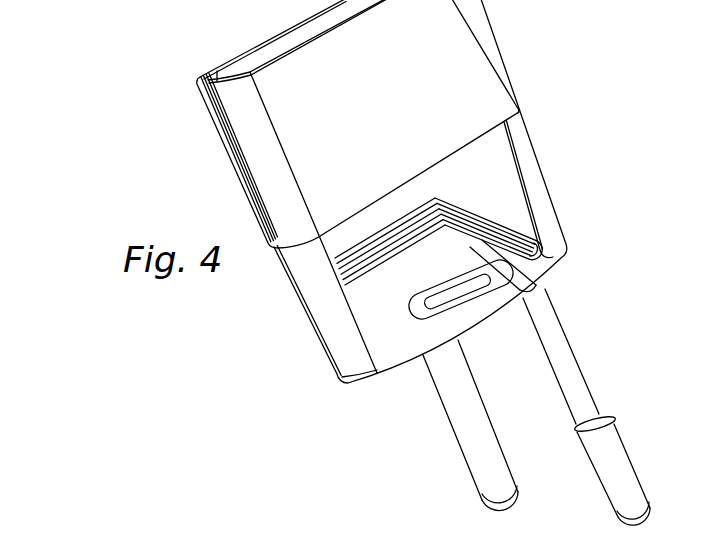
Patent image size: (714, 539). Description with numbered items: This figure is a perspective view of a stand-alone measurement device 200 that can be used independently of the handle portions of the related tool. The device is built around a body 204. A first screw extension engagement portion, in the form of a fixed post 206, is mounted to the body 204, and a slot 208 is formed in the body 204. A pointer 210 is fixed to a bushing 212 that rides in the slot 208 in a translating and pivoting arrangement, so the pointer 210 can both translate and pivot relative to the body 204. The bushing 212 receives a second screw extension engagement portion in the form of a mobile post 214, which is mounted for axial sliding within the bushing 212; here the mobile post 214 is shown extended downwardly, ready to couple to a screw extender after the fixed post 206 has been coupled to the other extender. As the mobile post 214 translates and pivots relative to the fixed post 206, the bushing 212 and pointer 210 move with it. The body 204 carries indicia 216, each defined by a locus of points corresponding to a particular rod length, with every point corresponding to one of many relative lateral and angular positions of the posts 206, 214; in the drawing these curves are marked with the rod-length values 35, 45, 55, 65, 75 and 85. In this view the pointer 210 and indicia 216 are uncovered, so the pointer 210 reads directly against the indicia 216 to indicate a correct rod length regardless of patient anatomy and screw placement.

The measurement device 200 is at (93, 103).
The body 204 is at (331, 364).
The fixed post 206 is at (465, 458).
The slot 208 is at (478, 275).
The pointer 210 is at (497, 240).
The bushing 212 is at (537, 288).
The mobile post 214 is at (610, 421).
The indicia 216 is at (334, 258).
The wire 35 is at (390, 218).
The wire 45 is at (430, 196).
The wire 55 is at (442, 198).
The wire 65 is at (444, 212).
The wire 75 is at (450, 230).
The wire 85 is at (447, 238).